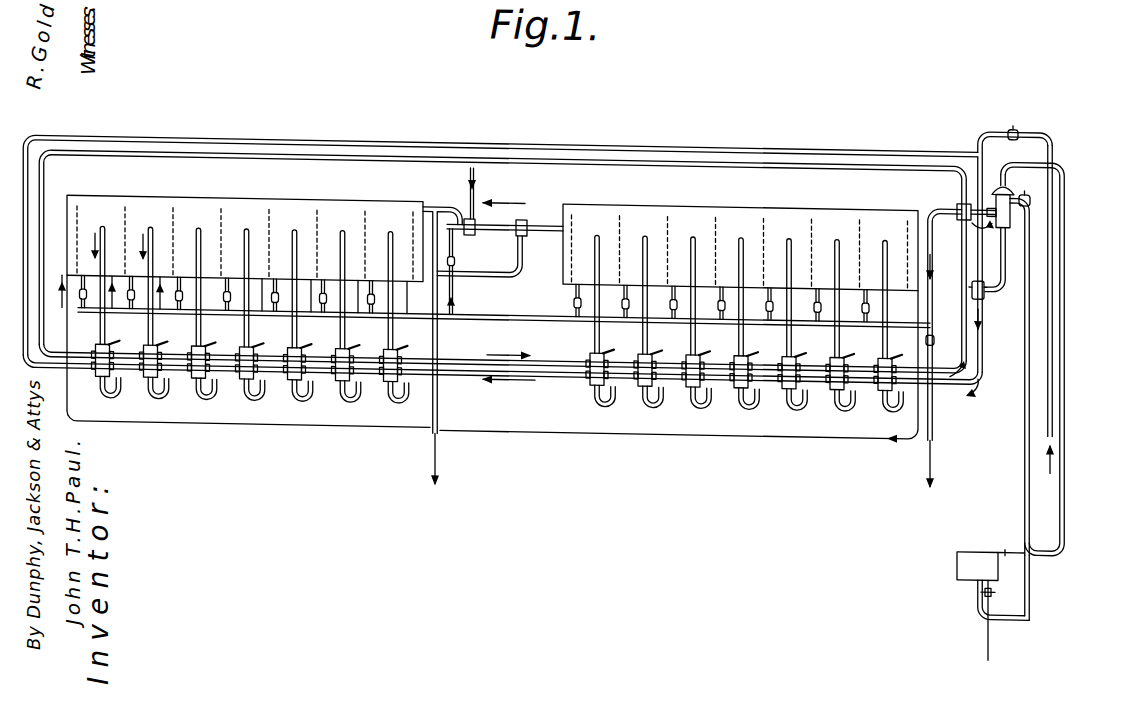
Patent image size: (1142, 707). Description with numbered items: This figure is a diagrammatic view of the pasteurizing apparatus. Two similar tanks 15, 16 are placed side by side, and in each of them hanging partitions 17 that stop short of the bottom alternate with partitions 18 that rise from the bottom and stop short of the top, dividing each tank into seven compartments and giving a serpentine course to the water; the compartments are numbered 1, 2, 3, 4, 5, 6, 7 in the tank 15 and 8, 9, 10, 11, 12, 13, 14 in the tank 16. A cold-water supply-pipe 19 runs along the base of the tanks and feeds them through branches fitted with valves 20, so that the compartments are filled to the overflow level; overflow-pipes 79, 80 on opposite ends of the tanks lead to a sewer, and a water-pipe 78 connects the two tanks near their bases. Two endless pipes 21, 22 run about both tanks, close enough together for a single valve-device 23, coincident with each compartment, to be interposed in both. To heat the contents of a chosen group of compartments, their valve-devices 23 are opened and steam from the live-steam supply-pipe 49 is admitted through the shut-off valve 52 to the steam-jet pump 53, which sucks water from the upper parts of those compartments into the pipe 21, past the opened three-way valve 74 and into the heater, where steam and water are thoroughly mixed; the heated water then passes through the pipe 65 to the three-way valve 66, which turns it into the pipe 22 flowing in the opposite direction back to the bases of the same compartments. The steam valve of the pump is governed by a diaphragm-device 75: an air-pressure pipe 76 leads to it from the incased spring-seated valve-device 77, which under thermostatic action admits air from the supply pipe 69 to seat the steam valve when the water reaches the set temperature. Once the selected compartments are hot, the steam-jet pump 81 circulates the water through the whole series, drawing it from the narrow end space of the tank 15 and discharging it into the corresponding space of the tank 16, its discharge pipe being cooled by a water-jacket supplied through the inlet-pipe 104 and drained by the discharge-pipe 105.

The first compartment 1 is at (91, 225).
The second compartment 2 is at (139, 226).
The third compartment 3 is at (187, 226).
The fourth compartment 4 is at (235, 227).
The fifth compartment 5 is at (283, 228).
The sixth compartment 6 is at (331, 229).
The seventh compartment 7 is at (379, 230).
The eighth compartment 8 is at (587, 234).
The ninth compartment 9 is at (635, 235).
The tenth compartment 10 is at (683, 235).
The eleventh compartment 11 is at (731, 236).
The twelfth compartment 12 is at (779, 237).
The thirteenth compartment 13 is at (827, 238).
The fourteenth compartment 14 is at (875, 239).
The tank 15 is at (362, 194).
The tank 16 is at (862, 194).
The partition 17 is at (125, 205).
The partition 18 is at (173, 205).
The cold-water supply-pipe 19 is at (144, 312).
The valve 20 is at (128, 290).
The pipe 21 is at (566, 155).
The pipe 22 is at (449, 135).
The valve-device 23 is at (93, 377).
The supply-pipe for live steam 49 is at (1053, 362).
The shut-off valve 52 is at (1031, 183).
The steam-jet pump 53 is at (1010, 203).
The pipe 65 is at (1006, 229).
The three-way valve 66 is at (984, 281).
The air-pressure pipe 69 is at (988, 617).
The three-way valve 74 is at (957, 194).
The diaphragm-device 75 is at (1006, 170).
The air-pressure pipe 76 is at (1012, 120).
The spring-seated valve-device 77 is at (957, 545).
The water-pipe 78 is at (215, 421).
The overflow-pipe 79 is at (926, 216).
The overflow-pipe 80 is at (436, 199).
The steam-jet pump 81 is at (503, 222).
The inlet-pipe 104 is at (476, 193).
The discharge-pipe 105 is at (473, 270).